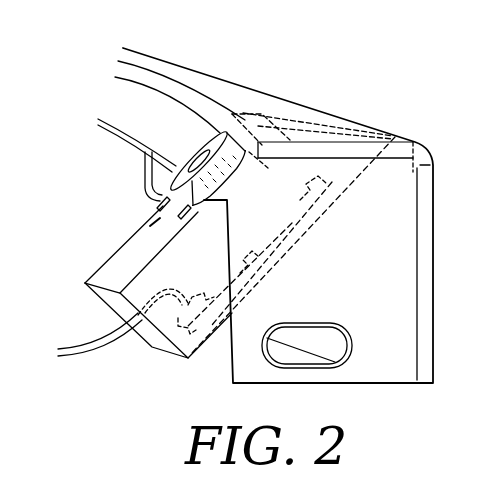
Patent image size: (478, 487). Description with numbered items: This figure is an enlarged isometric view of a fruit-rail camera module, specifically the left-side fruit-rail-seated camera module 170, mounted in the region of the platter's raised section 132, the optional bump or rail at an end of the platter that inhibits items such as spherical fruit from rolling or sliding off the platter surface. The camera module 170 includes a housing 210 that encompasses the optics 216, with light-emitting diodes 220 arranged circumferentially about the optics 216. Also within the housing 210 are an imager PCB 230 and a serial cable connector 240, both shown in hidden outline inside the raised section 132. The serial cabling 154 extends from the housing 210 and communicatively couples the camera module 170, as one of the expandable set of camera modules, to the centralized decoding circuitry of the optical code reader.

The raised section 132 is at (227, 92).
The serial cabling 154 is at (98, 353).
The left-side fruit-rail-seated camera module 170 is at (100, 179).
The housing 210 is at (127, 262).
The optics 216 is at (190, 145).
The light-emitting diodes 220 is at (165, 199).
The imager PCB 230 is at (330, 202).
The serial cable connector 240 is at (167, 351).